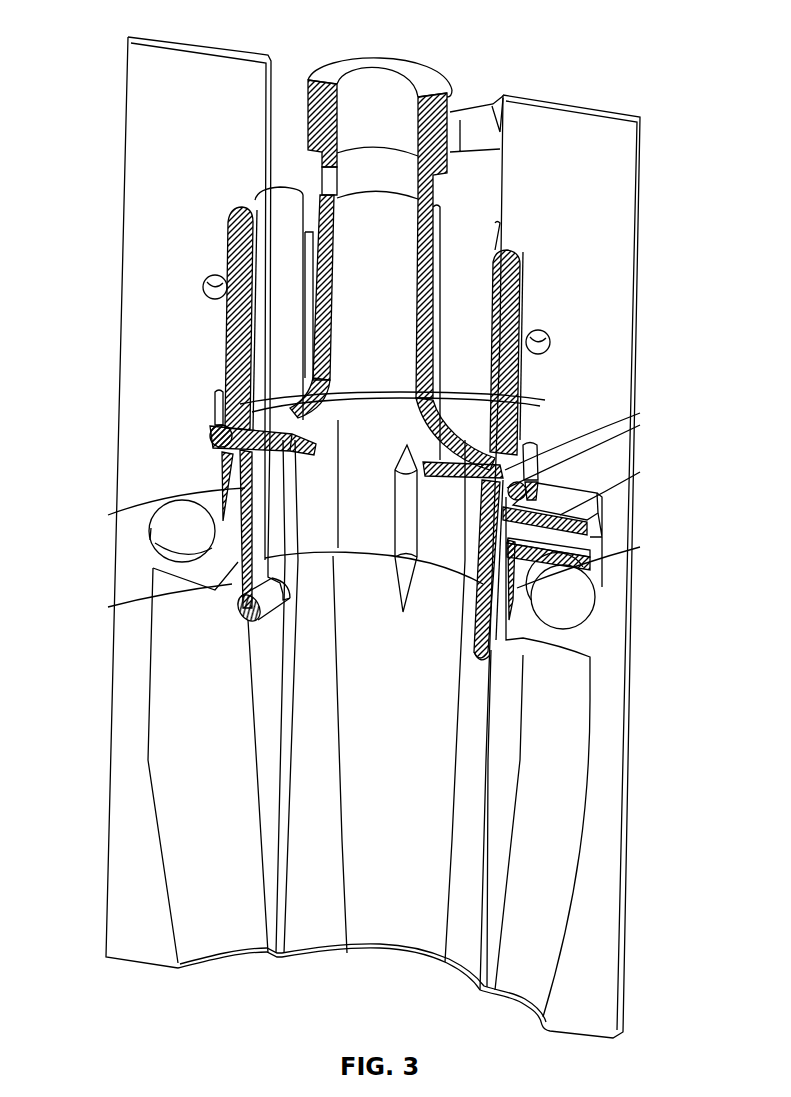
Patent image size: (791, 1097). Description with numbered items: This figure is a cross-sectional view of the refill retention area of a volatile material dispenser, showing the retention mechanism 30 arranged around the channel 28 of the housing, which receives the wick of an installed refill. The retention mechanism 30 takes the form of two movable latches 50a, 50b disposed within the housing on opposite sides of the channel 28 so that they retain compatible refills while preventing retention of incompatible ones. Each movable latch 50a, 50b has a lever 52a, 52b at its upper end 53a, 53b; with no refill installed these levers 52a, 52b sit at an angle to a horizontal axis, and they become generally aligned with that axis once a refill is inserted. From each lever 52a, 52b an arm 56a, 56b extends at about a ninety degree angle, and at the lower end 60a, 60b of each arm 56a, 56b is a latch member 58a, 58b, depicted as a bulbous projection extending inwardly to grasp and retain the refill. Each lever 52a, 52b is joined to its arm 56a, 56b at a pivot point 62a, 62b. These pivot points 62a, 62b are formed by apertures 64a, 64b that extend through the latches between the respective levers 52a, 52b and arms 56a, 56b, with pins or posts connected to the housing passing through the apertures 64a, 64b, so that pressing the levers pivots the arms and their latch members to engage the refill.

The channel 28 is at (388, 88).
The retention mechanism 30 is at (499, 650).
The movable latch 50a is at (227, 483).
The movable latch 50b is at (496, 533).
The lever 52a is at (300, 405).
The lever 52b is at (447, 463).
The upper end 53a is at (233, 443).
The upper end 53b is at (532, 507).
The arm 56a is at (238, 556).
The arm 56b is at (500, 592).
The latch member 58a is at (243, 597).
The latch member 58b is at (493, 633).
The lower end 60a is at (240, 607).
The lower end 60b is at (497, 621).
The pivot point 62a is at (210, 446).
The pivot point 62b is at (524, 482).
The aperture 64a is at (215, 426).
The aperture 64b is at (534, 482).